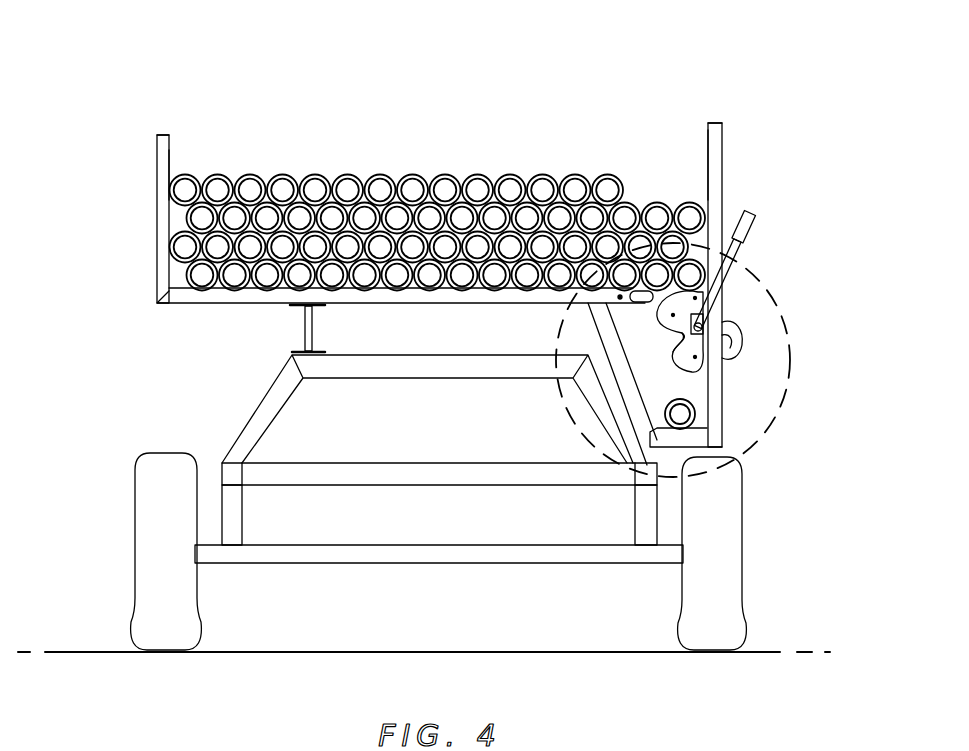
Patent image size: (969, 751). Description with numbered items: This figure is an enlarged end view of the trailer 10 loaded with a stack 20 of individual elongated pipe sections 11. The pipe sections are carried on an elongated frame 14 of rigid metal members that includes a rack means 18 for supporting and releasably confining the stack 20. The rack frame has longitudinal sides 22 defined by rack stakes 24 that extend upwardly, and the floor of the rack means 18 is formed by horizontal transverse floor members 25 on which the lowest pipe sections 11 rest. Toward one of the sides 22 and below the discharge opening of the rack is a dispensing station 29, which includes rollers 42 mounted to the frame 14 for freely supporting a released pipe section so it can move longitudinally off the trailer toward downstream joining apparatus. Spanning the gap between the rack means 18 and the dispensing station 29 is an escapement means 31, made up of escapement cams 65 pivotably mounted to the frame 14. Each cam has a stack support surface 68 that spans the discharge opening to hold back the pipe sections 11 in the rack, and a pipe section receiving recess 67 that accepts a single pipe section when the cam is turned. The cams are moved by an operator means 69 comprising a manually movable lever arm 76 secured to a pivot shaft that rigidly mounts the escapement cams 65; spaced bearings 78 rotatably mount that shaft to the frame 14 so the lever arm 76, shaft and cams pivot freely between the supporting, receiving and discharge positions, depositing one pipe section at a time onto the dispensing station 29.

The trailer 10 is at (707, 78).
The elongated pipe sections 11 is at (543, 216).
The elongated frame 14 is at (300, 325).
The rack means 18 is at (173, 138).
The stack 20 is at (428, 145).
The longitudinal sides 22 is at (152, 232).
The rack stakes 24 is at (165, 172).
The horizontal transverse floor members 25 is at (463, 300).
The dispensing station 29 is at (686, 388).
The escapement means 31 is at (732, 312).
The rollers 42 is at (712, 425).
The escapement cams 65 is at (645, 317).
The pipe section receiving recess 67 is at (672, 334).
The stack support surface 68 is at (724, 342).
The operator means 69 is at (755, 208).
The lever arm 76 is at (720, 252).
The spaced bearings 78 is at (726, 360).